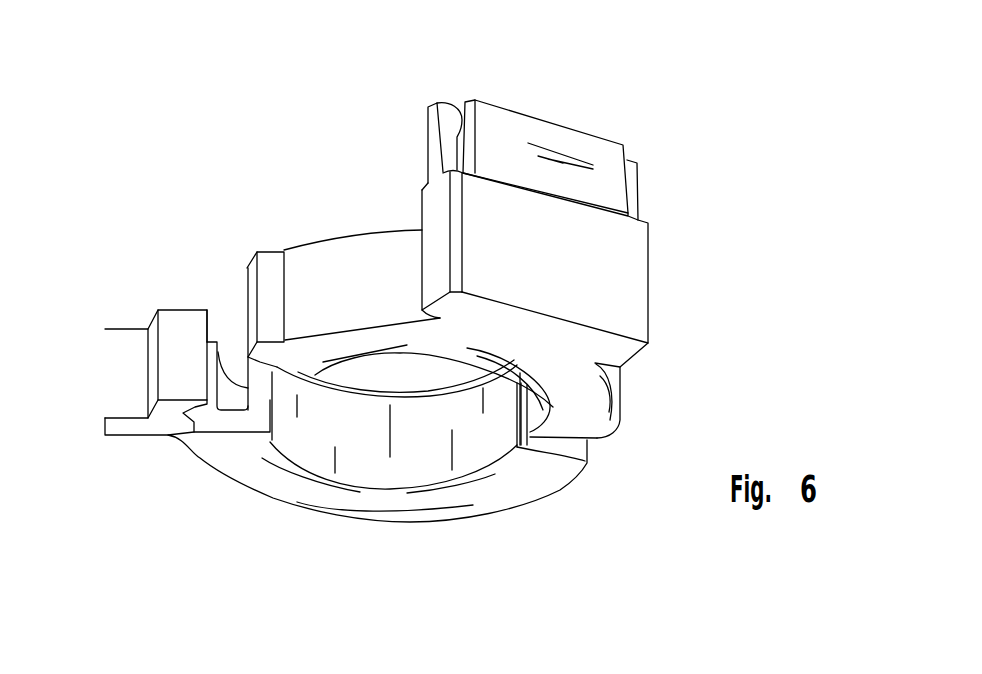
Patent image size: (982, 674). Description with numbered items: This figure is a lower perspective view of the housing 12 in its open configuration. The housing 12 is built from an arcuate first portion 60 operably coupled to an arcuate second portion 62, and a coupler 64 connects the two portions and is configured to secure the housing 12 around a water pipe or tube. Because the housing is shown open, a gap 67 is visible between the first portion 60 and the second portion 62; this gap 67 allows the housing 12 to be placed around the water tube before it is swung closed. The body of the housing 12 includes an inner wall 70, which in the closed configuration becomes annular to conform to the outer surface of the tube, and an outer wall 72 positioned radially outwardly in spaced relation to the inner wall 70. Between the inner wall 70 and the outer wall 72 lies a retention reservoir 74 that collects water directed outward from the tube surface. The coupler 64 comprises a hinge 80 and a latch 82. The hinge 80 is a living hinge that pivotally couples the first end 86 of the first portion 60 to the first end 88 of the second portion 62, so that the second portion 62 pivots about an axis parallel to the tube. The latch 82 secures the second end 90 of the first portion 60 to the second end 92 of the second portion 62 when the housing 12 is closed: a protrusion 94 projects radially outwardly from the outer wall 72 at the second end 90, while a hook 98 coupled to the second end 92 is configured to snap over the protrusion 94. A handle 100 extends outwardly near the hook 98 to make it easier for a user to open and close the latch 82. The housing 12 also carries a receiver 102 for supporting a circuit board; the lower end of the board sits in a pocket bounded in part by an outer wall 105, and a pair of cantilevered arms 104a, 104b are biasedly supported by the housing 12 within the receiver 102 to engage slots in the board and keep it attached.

The housing 12 is at (728, 272).
The first portion 60 is at (393, 250).
The second portion 62 is at (318, 517).
The coupler 64 is at (163, 247).
The gap 67 is at (216, 427).
The inner wall 70 is at (285, 407).
The outer wall 72 is at (213, 340).
The retention reservoir 74 is at (233, 395).
The hinge 80 is at (517, 410).
The latch 82 is at (272, 252).
The first end of first portion 86 is at (630, 417).
The first end of second portion 88 is at (566, 494).
The second end of first portion 90 is at (273, 199).
The second end of second portion 92 is at (124, 448).
The protrusion 94 is at (272, 290).
The hook 98 is at (173, 327).
The handle 100 is at (105, 389).
The receiver 102 is at (533, 111).
The cantilevered arm 104a is at (637, 190).
The cantilevered arm 104b is at (428, 118).
The outer wall of receiver 105 is at (582, 140).